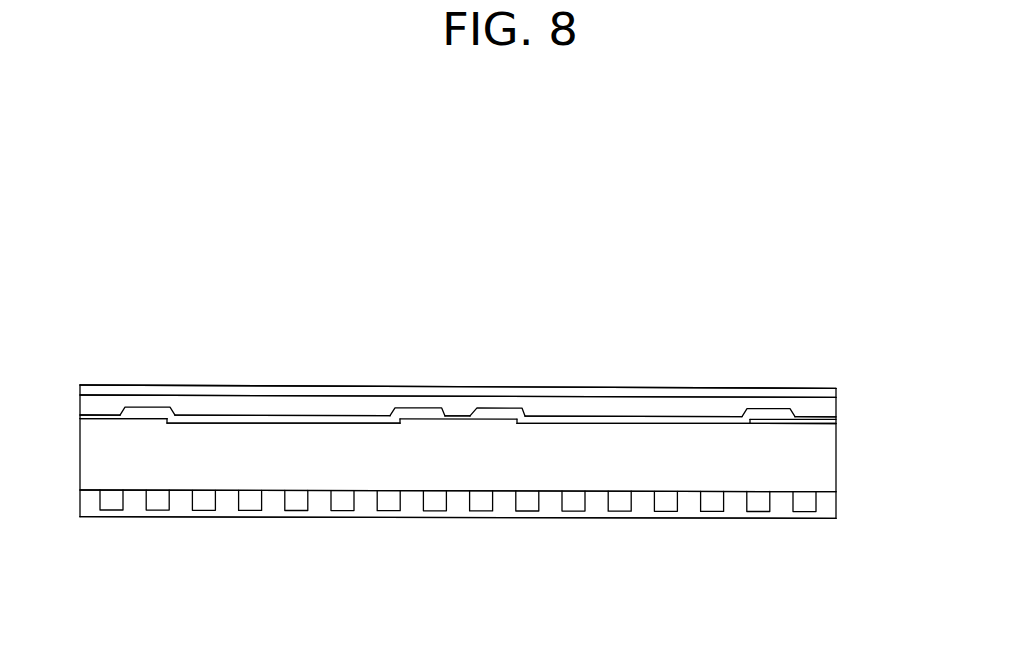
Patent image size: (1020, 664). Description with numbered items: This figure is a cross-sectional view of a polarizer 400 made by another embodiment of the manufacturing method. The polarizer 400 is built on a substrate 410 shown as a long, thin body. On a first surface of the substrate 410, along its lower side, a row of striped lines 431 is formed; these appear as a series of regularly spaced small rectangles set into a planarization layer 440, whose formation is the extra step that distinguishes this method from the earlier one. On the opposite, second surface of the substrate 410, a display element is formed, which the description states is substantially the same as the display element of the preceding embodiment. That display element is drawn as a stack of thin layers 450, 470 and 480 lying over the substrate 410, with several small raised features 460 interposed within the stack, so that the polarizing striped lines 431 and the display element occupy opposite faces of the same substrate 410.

The polarizer 400 is at (505, 222).
The substrate 410 is at (836, 465).
The striped lines 431 is at (482, 498).
The planarization layer 440 is at (836, 505).
The first electrode layer 450 is at (836, 420).
The thin film transistors 460 is at (776, 414).
The insulating layer 470 is at (836, 413).
The encapsulation layer 480 is at (836, 392).